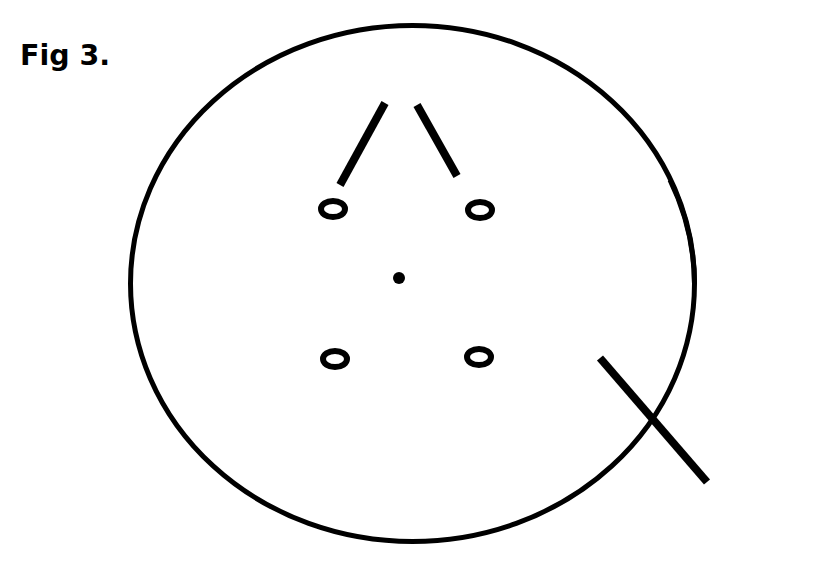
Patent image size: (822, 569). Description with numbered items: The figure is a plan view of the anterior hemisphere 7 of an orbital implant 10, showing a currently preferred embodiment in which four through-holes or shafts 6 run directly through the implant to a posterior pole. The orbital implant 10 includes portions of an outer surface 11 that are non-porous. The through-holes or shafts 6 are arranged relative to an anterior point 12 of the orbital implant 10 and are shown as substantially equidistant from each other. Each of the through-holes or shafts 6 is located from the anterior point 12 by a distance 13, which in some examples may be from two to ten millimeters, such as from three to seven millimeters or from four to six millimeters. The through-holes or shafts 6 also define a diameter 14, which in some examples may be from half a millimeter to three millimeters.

The through-holes or shafts 6 is at (398, 119).
The anterior hemisphere 7 is at (675, 445).
The orbital implant 10 is at (655, 97).
The outer surface 11 is at (687, 203).
The anterior point 12 is at (420, 281).
The distance 13 is at (399, 284).
The diameter 14 is at (293, 307).